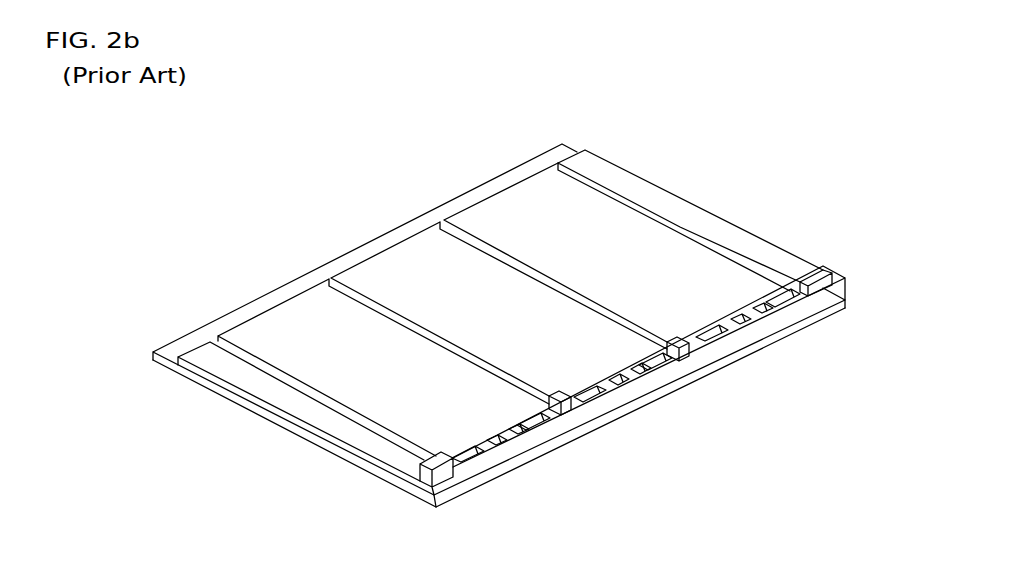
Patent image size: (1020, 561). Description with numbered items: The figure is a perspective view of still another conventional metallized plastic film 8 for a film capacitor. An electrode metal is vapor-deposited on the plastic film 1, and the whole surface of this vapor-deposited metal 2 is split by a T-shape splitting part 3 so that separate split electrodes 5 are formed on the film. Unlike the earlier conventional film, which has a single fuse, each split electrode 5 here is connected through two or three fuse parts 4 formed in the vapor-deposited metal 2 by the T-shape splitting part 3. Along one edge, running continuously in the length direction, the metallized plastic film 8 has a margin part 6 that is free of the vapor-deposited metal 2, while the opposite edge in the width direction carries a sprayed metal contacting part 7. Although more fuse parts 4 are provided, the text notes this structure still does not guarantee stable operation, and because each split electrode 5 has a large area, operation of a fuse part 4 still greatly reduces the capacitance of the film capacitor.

The plastic film 1 is at (665, 391).
The vapor-deposited metal 2 is at (303, 410).
The T-shape splitting part 3 is at (810, 285).
The fuse part 4 is at (495, 442).
The split electrode 5 is at (493, 220).
The margin part 6 is at (255, 303).
The sprayed metal contacting part 7 is at (647, 424).
The metallized plastic film 8 is at (853, 247).